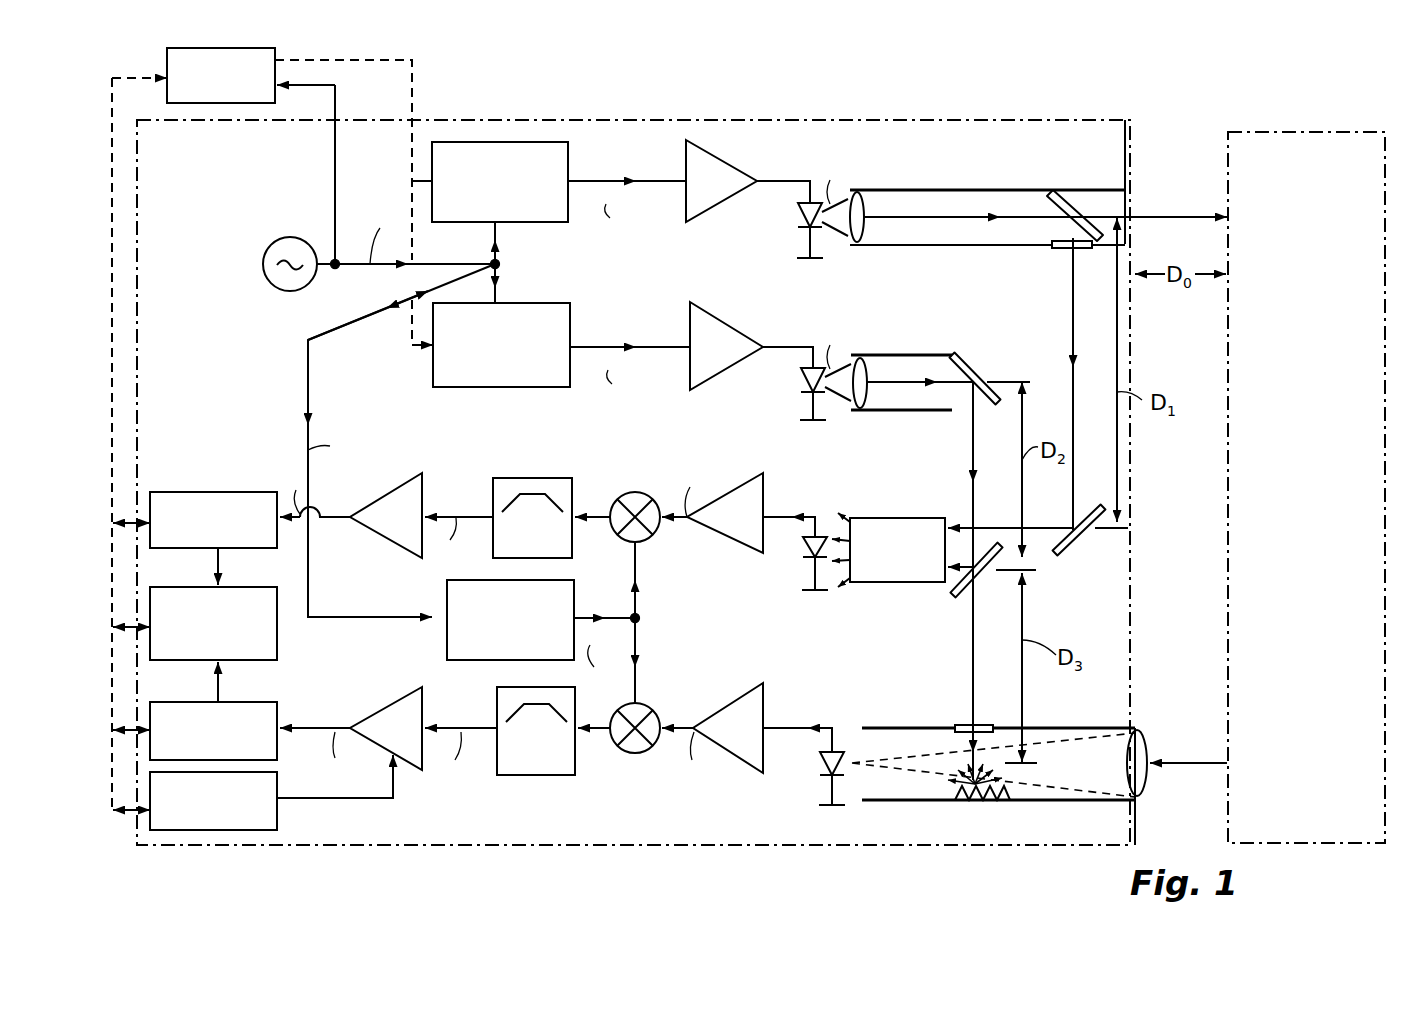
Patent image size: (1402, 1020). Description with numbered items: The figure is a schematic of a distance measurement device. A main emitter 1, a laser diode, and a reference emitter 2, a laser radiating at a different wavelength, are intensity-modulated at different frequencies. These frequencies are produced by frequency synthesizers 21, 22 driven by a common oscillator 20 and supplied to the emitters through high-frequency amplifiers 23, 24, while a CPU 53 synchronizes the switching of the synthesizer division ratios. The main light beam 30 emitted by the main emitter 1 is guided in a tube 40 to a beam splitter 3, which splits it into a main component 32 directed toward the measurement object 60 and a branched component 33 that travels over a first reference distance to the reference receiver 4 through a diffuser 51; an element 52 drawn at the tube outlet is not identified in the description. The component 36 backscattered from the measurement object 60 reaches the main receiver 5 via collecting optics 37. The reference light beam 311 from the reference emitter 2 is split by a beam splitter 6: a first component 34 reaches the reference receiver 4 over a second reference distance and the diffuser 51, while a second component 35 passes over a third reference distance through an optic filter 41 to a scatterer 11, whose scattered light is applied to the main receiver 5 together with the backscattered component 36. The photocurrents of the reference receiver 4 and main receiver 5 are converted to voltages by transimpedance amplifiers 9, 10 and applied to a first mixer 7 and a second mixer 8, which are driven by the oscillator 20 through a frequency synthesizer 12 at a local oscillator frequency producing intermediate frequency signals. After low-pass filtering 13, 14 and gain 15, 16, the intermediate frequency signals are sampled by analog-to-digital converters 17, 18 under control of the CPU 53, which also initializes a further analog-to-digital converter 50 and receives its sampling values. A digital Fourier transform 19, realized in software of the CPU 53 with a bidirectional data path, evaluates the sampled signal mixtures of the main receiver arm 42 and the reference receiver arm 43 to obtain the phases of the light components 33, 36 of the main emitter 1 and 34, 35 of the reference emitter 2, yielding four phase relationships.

The main emitter 1 is at (798, 214).
The reference emitter 2 is at (801, 380).
The beam splitter 3 is at (1062, 196).
The reference receiver 4 is at (800, 552).
The main receiver 5 is at (818, 762).
The beam splitter 6 is at (978, 578).
The first mixer 7 is at (628, 495).
The second mixer 8 is at (636, 755).
The transimpedance amplifier 9 is at (728, 530).
The transimpedance amplifier 10 is at (750, 760).
The scattering medium 11 is at (1010, 800).
The frequency synthesizer 12 is at (445, 638).
The low-pass filter 13 is at (508, 480).
The low-pass filter 14 is at (538, 776).
The gain amplifier 15 is at (405, 488).
The gain amplifier 16 is at (395, 703).
The analog-to-digital converter 17 is at (215, 492).
The analog-to-digital converter 18 is at (280, 718).
The digital Fourier transform 19 is at (280, 633).
The oscillator 20 is at (276, 287).
The frequency synthesizer 21 is at (556, 222).
The frequency synthesizer 22 is at (496, 387).
The high-frequency amplifier 23 is at (708, 205).
The high-frequency amplifier 24 is at (710, 372).
The main light beam 30 is at (943, 245).
The reference light beam 311 is at (902, 410).
The main component 32 is at (1163, 217).
The branched component 33 is at (1073, 334).
The first component 34 is at (955, 586).
The second component 35 is at (973, 665).
The backscattered component 36 is at (1185, 763).
The collecting optics 37 is at (1142, 792).
The tube 40 is at (985, 190).
The optic filter 41 is at (962, 725).
The main receiver arm 42 is at (222, 678).
The reference receiver arm 43 is at (222, 566).
The analog-to-digital converter 50 is at (284, 812).
The diffuser 51 is at (870, 518).
The optical filter 52 is at (1060, 250).
The central processing unit 53 is at (275, 52).
The measurement object 60 is at (1228, 445).